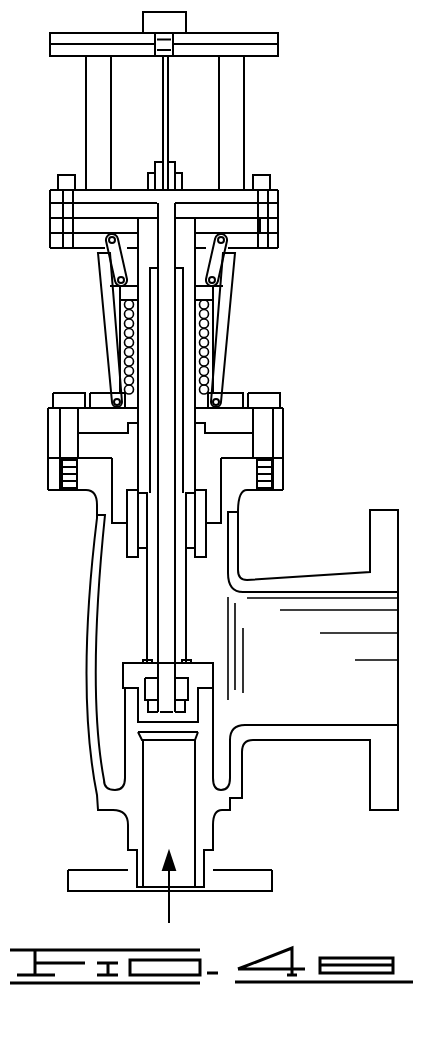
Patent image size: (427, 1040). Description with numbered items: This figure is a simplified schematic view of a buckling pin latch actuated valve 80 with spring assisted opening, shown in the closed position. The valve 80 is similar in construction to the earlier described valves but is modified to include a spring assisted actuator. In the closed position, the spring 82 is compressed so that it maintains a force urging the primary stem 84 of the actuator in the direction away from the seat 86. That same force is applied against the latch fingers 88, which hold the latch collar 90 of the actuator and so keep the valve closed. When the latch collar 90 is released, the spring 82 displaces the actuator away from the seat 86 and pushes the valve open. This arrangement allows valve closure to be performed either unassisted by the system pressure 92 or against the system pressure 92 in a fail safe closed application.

The valve 80 is at (268, 92).
The latch collar 90 is at (280, 239).
The spring 82 is at (208, 327).
The latch fingers 88 is at (229, 333).
The primary stem 84 is at (146, 625).
The seat 86 is at (206, 702).
The system pressure 92 is at (188, 818).